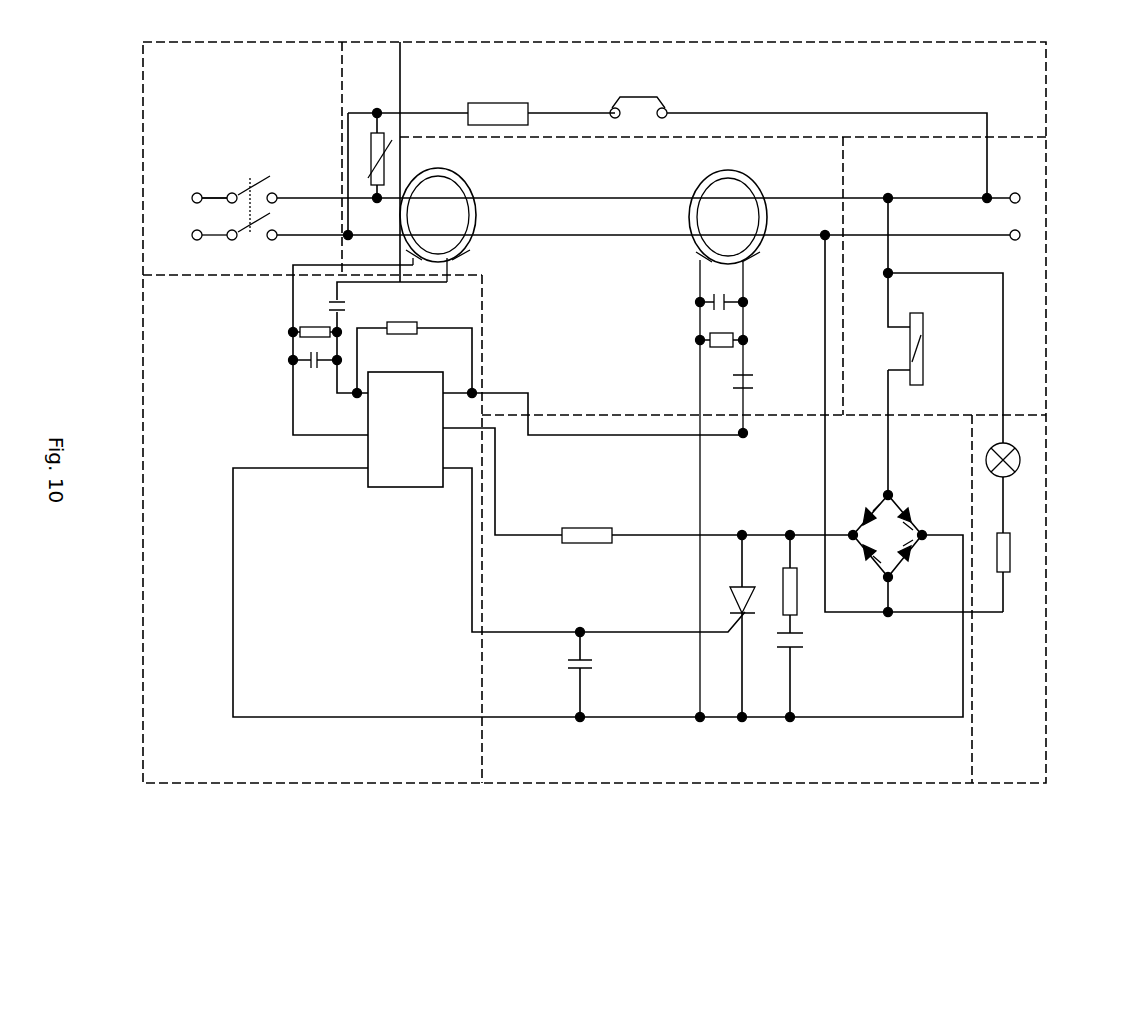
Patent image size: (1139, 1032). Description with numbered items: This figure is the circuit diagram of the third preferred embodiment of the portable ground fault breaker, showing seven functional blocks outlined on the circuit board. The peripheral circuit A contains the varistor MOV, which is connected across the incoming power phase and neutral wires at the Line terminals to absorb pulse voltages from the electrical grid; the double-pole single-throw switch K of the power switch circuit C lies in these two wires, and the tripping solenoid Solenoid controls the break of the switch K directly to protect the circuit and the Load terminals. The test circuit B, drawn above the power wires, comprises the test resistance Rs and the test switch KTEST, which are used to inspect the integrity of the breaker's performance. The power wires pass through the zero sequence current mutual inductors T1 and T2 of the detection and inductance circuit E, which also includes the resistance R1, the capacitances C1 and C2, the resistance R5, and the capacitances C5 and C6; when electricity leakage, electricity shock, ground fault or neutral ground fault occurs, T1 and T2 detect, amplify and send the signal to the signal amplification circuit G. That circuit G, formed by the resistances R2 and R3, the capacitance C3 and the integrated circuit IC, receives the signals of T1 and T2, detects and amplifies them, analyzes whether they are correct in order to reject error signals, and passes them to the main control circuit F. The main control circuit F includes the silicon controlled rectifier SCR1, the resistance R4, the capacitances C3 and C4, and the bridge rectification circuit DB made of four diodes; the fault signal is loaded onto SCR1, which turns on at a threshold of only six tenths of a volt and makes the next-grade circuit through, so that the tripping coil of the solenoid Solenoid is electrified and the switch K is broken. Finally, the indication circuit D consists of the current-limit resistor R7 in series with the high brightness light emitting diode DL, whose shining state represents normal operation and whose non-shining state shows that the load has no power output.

The peripheral circuit A is at (360, 250).
The test circuit B is at (993, 77).
The power switch circuit C is at (955, 320).
The indication circuit D is at (1022, 563).
The detection and inductance circuit E is at (783, 347).
The main control circuit F is at (725, 740).
The signal amplification circuit G is at (357, 668).
The double-pole single-throw switch K is at (234, 198).
The line input terminals Line is at (202, 212).
The load output terminals Load is at (1021, 216).
The varistor MOV is at (392, 159).
The zero sequence current mutual inductor T1 is at (438, 213).
The zero sequence current mutual inductor T2 is at (728, 430).
The test resistance Rs is at (499, 102).
The test switch KTEST is at (638, 92).
The resistance R1 is at (315, 322).
The resistance R2 is at (402, 319).
The resistance R3 is at (587, 527).
The resistance R4 is at (799, 591).
The resistance R5 is at (721, 350).
The current-limit resistor R7 is at (1015, 552).
The capacitance C1 is at (347, 311).
The capacitance C2 is at (310, 370).
The capacitance C3 is at (572, 675).
The capacitance C4 is at (801, 640).
The capacitance C5 is at (755, 382).
The capacitance C6 is at (738, 301).
The integrated circuit IC is at (405, 429).
The silicon controlled rectifier SCR1 is at (751, 589).
The bridge rectification circuit DB is at (888, 536).
The high brightness light emitting diode DL is at (1012, 460).
The tripping solenoid Solenoid is at (948, 349).